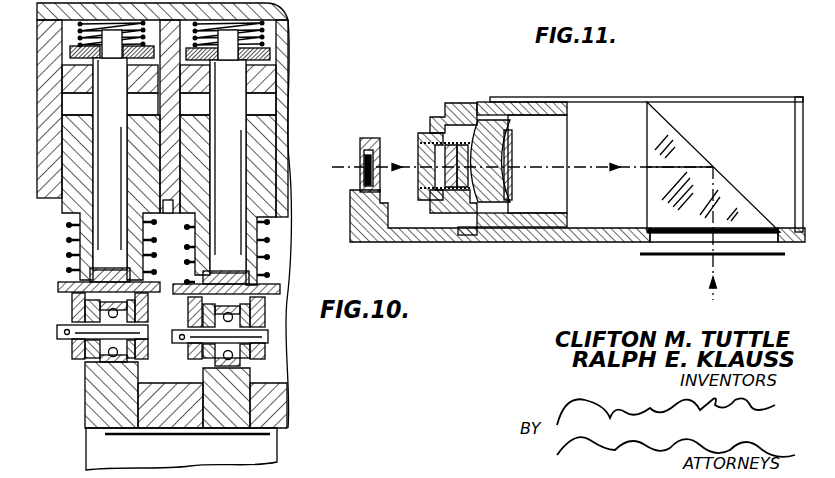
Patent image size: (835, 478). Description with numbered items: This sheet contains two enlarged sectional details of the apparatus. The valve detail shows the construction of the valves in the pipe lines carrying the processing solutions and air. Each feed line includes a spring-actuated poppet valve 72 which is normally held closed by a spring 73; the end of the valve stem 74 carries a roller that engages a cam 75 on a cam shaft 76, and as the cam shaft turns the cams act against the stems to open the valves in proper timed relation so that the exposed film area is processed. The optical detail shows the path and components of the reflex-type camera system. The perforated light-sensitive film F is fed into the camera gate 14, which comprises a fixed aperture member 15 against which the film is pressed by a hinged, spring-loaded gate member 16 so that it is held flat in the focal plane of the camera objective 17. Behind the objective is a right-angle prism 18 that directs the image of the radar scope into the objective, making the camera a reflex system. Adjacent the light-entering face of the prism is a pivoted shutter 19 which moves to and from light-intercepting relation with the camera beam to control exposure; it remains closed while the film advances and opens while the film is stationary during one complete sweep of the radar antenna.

In FIG. 10, the spring-actuated poppet valve 72 is at (268, 58).
In FIG. 10, the springs 73 is at (257, 27).
In FIG. 10, the valve stems 74 is at (230, 103).
In FIG. 10, the cam 75 is at (85, 390).
In FIG. 10, the cam shaft 76 is at (263, 445).
In FIG. 11, the camera gate 14 is at (356, 194).
In FIG. 11, the fixed aperture member 15 is at (374, 141).
In FIG. 11, the gate member 16 is at (358, 147).
In FIG. 11, the light-sensitive film F is at (368, 140).
In FIG. 11, the camera objective 17 is at (458, 120).
In FIG. 11, the right-angle prism 18 is at (672, 135).
In FIG. 11, the pivoted shutter 19 is at (668, 258).